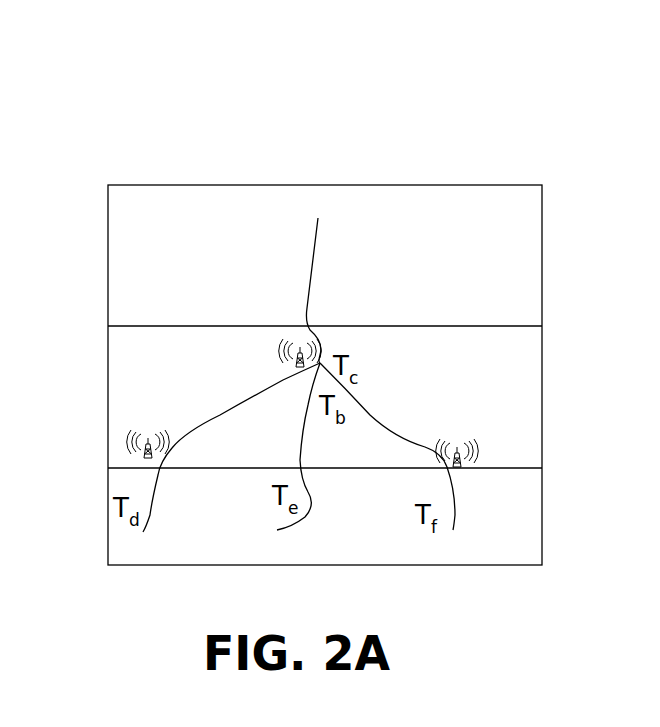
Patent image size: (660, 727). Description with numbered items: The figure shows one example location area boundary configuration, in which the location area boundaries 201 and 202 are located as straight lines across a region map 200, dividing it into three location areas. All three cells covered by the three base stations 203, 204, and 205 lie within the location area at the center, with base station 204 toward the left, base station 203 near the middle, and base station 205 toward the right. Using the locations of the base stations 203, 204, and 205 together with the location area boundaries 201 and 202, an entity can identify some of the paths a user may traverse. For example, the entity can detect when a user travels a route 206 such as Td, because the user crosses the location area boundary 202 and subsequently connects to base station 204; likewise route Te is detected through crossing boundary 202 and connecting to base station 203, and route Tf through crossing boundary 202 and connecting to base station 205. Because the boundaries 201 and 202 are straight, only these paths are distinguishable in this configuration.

The region map 200 is at (435, 181).
The location area boundary 201 is at (517, 325).
The location area boundary 202 is at (512, 467).
The base station 203 is at (278, 347).
The base station 204 is at (125, 438).
The base station 205 is at (480, 425).
The route 206 is at (245, 354).